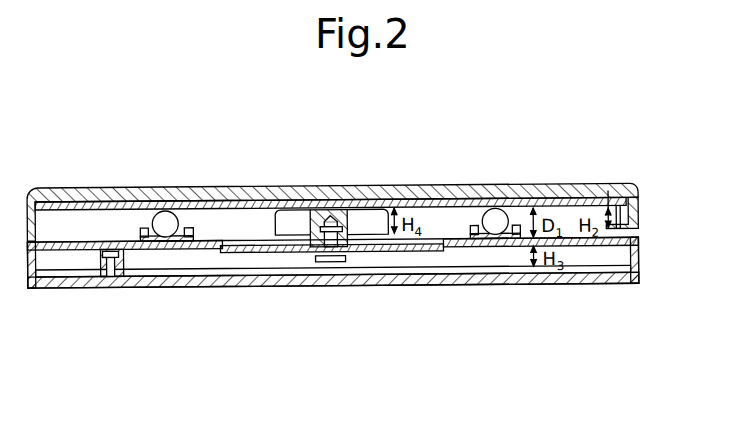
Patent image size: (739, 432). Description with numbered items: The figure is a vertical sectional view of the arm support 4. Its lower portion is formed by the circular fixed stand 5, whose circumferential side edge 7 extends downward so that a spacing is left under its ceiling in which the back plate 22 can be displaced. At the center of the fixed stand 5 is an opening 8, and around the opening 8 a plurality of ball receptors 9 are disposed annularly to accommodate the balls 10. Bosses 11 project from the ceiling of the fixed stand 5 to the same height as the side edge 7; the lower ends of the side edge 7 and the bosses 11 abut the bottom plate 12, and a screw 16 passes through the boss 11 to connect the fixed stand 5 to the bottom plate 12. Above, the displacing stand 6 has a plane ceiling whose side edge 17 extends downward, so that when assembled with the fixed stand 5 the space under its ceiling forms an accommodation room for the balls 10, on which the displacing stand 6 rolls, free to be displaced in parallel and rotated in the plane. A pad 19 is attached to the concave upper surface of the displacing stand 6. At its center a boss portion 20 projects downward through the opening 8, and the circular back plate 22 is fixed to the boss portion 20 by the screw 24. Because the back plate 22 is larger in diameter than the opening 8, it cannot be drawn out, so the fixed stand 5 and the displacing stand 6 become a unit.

The arm support 4 is at (339, 217).
The fixed stand 5 is at (460, 231).
The displacing stand 6 is at (553, 188).
The circumferential side edge 7 is at (344, 237).
The opening 8 is at (283, 190).
The ball receptors 9 is at (194, 230).
The balls 10 is at (164, 223).
The bosses 11 is at (100, 262).
The bottom plate 12 is at (603, 289).
The screw 16 is at (113, 291).
The side edge 17 is at (640, 198).
The pad 19 is at (85, 189).
The boss portion 20 is at (377, 191).
The back plate 22 is at (250, 258).
The screw 24 is at (330, 266).